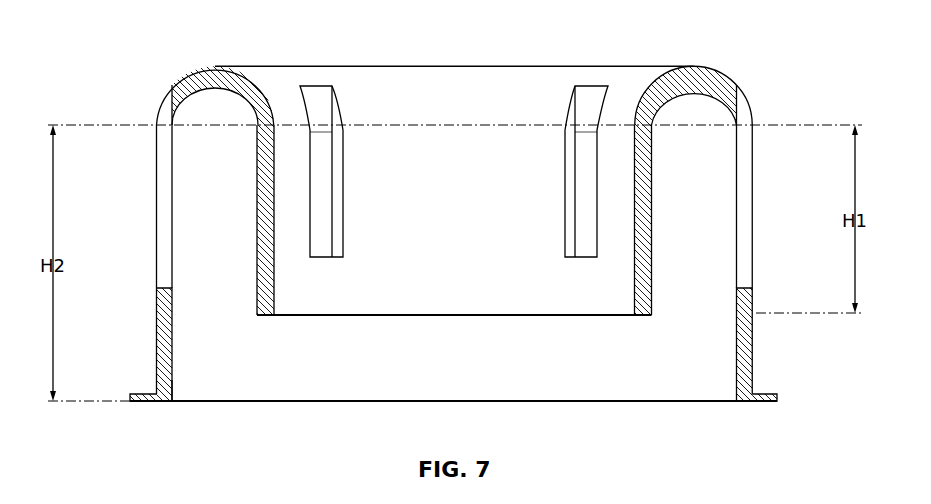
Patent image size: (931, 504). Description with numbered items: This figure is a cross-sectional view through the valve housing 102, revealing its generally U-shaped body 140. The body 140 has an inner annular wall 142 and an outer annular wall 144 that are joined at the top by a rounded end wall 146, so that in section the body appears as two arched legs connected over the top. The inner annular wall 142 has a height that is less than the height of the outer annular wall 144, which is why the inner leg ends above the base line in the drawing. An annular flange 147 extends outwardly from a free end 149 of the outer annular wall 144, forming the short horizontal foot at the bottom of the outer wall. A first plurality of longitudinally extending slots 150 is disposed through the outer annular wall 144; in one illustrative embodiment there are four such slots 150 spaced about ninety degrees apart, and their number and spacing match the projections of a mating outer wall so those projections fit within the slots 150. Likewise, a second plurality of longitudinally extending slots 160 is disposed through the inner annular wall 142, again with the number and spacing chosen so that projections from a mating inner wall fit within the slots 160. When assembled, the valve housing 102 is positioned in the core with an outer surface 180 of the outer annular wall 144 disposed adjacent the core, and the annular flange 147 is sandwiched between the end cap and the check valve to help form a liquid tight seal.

The valve housing 102 is at (122, 40).
The U-shaped body 140 is at (157, 358).
The inner annular wall 142 is at (272, 282).
The outer annular wall 144 is at (753, 303).
The rounded end wall 146 is at (697, 66).
The annular flange 147 is at (147, 402).
The free end 149 is at (170, 395).
The slot 150 is at (146, 212).
The slot 160 is at (331, 166).
The outer surface 180 is at (753, 325).